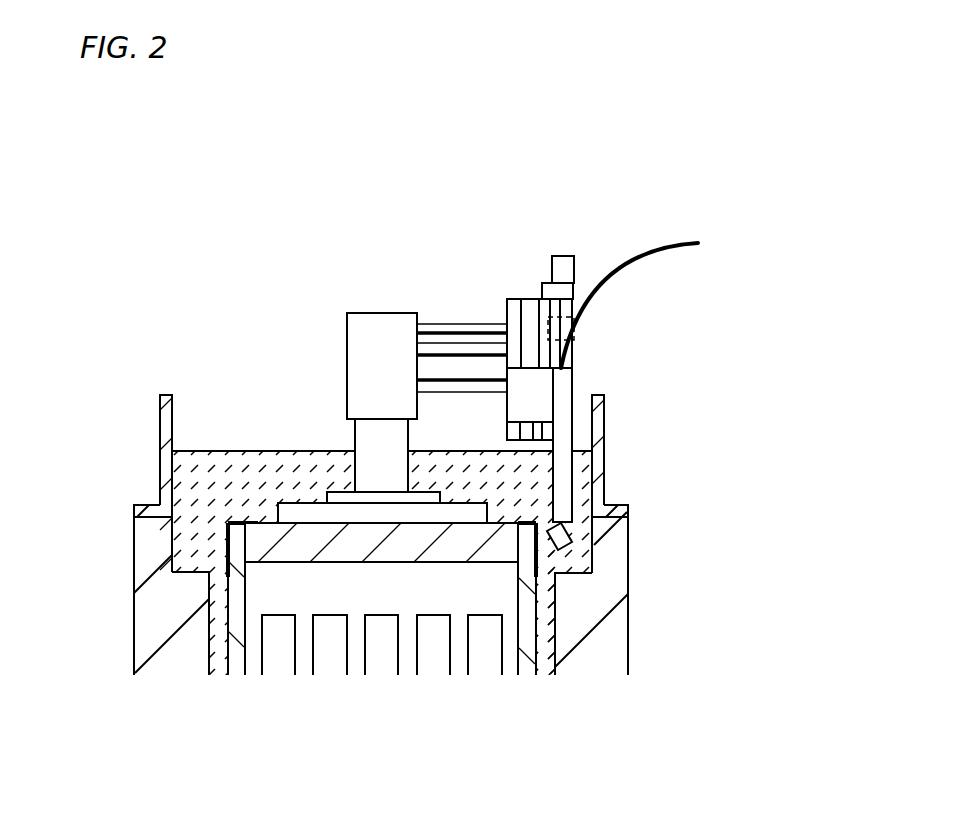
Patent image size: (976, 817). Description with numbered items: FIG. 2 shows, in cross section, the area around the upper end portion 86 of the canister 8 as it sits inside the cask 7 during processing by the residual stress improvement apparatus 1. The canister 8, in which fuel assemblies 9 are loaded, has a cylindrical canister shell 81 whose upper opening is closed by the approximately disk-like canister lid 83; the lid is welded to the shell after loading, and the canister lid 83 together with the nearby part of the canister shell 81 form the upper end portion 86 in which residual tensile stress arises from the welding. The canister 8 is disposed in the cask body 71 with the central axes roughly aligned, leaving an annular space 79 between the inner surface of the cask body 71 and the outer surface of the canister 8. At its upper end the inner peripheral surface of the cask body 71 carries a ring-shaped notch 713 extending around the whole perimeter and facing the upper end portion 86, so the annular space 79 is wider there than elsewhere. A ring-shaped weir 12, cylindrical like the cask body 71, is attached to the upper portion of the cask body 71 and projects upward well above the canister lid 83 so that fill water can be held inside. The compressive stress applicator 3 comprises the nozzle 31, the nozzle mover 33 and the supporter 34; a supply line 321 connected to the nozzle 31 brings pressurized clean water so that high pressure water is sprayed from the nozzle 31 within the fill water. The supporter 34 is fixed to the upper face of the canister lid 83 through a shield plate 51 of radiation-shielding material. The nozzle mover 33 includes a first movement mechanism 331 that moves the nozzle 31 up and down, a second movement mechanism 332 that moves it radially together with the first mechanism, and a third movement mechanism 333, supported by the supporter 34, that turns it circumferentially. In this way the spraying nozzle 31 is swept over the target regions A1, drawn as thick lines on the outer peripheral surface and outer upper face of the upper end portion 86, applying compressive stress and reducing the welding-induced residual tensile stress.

The residual stress improvement apparatus 1 is at (378, 433).
The compressive stress applicator 3 is at (522, 342).
The cask 7 is at (384, 535).
The canister 8 is at (361, 628).
The fuel assemblies 9 is at (280, 643).
The ring-shaped weir 12 is at (597, 455).
The nozzle 31 is at (570, 544).
The nozzle mover 33 is at (460, 287).
The supporter 34 is at (355, 447).
The shield plate 51 is at (310, 508).
The cask body 71 is at (610, 618).
The annular space 79 is at (547, 637).
The canister shell 81 is at (237, 607).
The canister lid 83 is at (255, 540).
The upper end portion 86 is at (282, 536).
The supply line 321 is at (650, 258).
The first movement mechanism 331 is at (528, 280).
The second movement mechanism 332 is at (477, 320).
The third movement mechanism 333 is at (375, 316).
The ring-shaped notch 713 is at (173, 570).
The target regions A1 is at (185, 555).